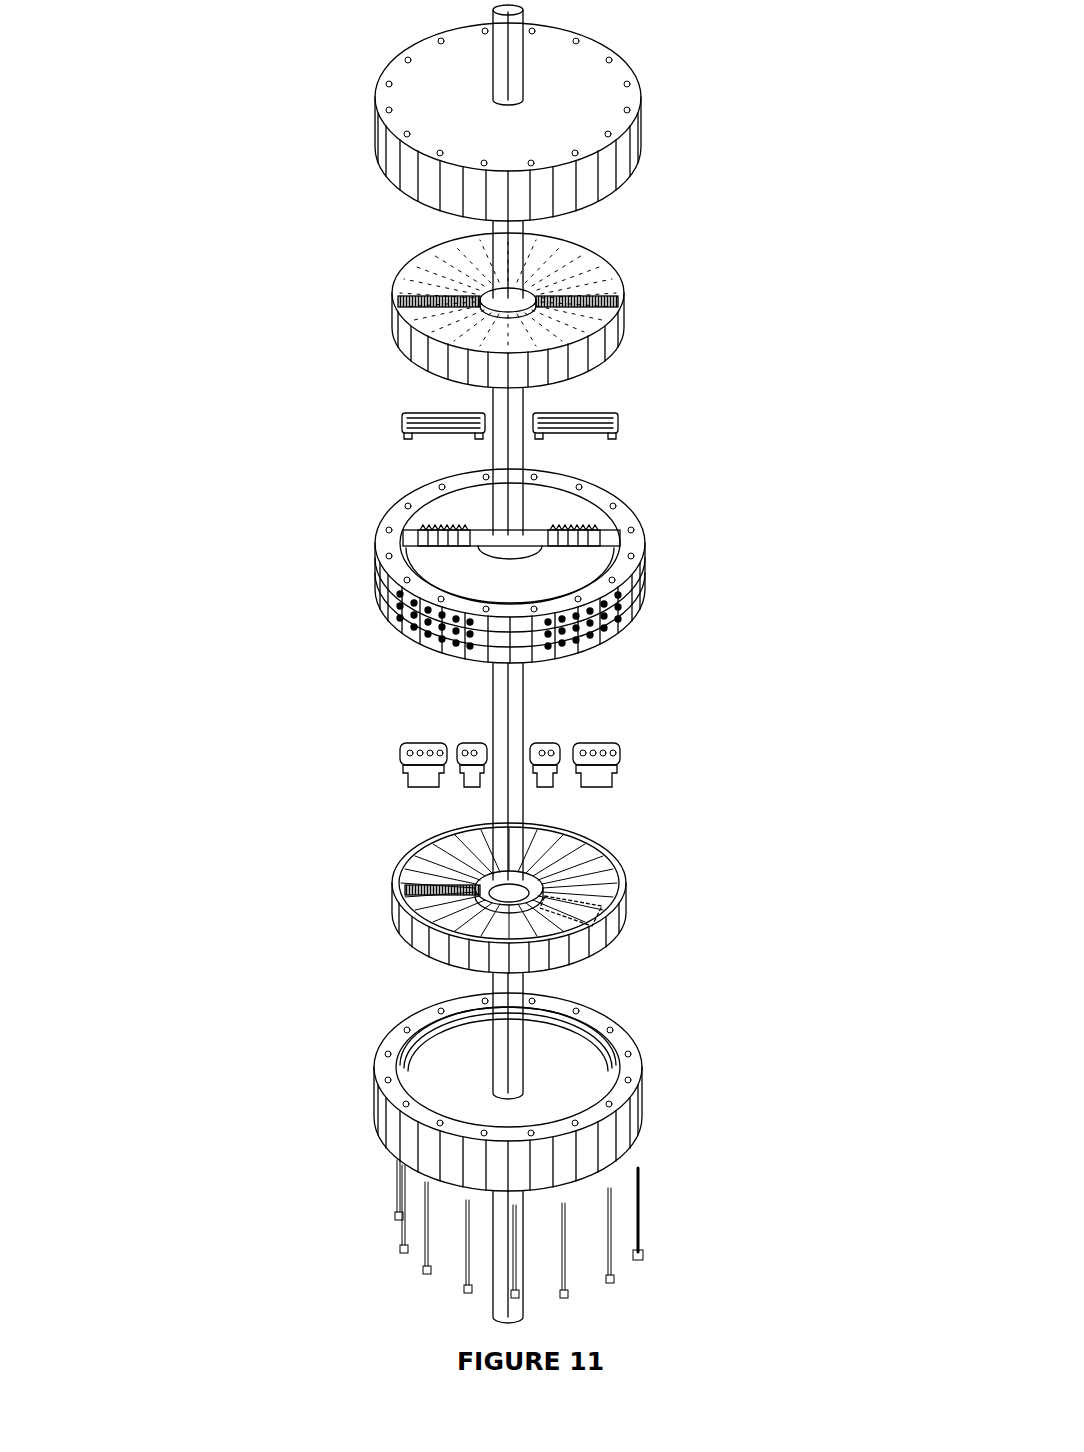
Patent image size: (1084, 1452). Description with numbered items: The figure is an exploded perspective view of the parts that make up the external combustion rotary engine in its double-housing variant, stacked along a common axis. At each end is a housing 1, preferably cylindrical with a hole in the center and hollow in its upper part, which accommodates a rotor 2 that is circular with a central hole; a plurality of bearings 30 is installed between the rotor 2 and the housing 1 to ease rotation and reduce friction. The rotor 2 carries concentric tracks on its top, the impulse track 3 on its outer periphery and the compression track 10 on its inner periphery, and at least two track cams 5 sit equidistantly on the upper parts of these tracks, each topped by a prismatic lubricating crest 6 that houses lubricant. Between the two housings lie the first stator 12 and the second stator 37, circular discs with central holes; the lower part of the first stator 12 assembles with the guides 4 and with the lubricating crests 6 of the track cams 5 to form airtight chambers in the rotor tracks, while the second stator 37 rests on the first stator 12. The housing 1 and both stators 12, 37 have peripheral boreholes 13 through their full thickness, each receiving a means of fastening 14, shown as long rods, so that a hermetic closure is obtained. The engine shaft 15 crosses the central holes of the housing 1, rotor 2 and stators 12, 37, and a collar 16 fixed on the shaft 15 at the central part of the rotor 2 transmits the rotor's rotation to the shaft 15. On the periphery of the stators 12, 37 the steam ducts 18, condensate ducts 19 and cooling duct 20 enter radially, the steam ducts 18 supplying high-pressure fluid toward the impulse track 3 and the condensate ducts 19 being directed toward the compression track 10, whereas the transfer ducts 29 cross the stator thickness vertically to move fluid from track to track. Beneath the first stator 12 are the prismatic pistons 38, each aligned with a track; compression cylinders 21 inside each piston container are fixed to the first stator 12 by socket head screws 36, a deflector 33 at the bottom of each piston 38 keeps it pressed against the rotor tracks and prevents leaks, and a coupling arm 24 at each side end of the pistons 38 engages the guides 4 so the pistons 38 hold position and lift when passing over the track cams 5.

The housing 1 is at (641, 147).
The rotor 2 is at (623, 317).
The impulse track 3 is at (590, 877).
The guide 4 is at (403, 636).
The track cams 5 is at (412, 897).
The lubricating crest 6 is at (610, 897).
The compression track 10 is at (565, 907).
The first stator 12 is at (644, 572).
The boreholes 13 is at (386, 86).
The means of fastening 14 is at (637, 1260).
The engine shaft 15 is at (497, 34).
The collar 16 is at (487, 297).
The steam ducts 18 is at (618, 603).
The condensate ducts 19 is at (580, 652).
The cooling duct 20 is at (630, 623).
The compression cylinders 21 is at (415, 538).
The coupling arm 24 is at (617, 420).
The transfer ducts 29 is at (445, 545).
The bearings 30 is at (408, 1053).
The deflector 33 is at (400, 426).
The socket head screws 36 is at (417, 530).
The second stator 37 is at (644, 597).
The piston 38 is at (418, 770).